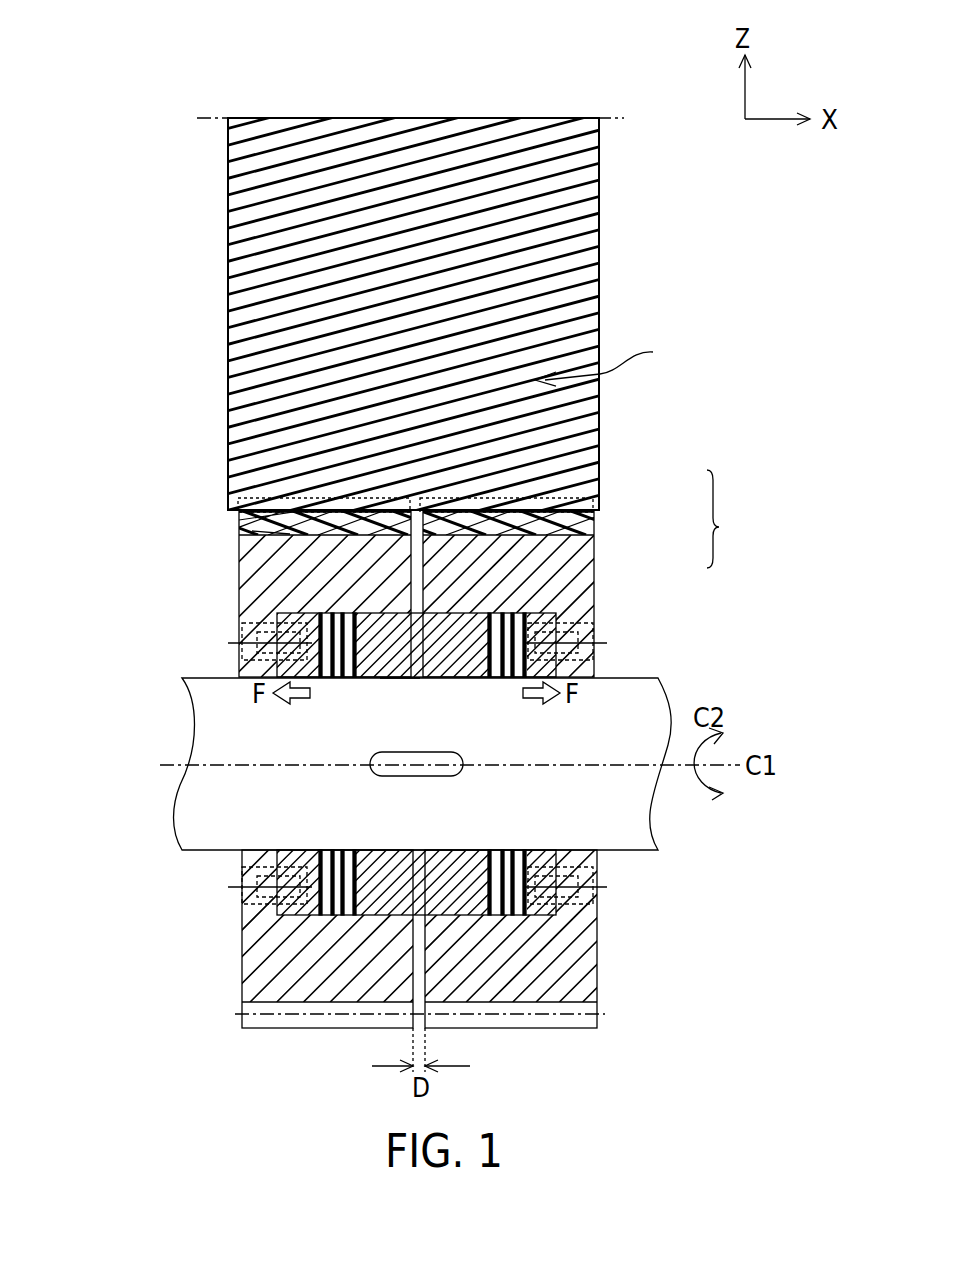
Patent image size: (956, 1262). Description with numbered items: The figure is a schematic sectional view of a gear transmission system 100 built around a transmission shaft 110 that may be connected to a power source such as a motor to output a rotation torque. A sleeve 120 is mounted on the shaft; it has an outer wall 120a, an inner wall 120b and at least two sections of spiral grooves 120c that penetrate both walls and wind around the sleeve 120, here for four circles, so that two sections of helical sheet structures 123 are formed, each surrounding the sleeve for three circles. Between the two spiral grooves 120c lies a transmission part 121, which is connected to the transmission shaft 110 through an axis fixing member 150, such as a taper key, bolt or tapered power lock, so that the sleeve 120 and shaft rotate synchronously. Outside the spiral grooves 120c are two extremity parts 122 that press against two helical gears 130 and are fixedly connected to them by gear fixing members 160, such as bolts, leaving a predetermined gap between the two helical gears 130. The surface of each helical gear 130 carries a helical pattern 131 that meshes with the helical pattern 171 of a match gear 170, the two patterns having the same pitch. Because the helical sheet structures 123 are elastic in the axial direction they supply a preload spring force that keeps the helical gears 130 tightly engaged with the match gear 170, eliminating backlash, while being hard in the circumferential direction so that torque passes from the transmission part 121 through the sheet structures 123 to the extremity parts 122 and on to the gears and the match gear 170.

The gear transmission system 100 is at (82, 41).
The transmission shaft 110 is at (625, 690).
The sleeve 120 is at (737, 519).
The outer wall 120a is at (298, 610).
The inner wall 120b is at (398, 682).
The spiral grooves 120c is at (323, 918).
The transmission part 121 is at (553, 537).
The extremity parts 122 is at (528, 485).
The helical sheet structures 123 is at (350, 915).
The helical gears 130 is at (255, 593).
The helical pattern 131 is at (239, 518).
The axis fixing member 150 is at (417, 776).
The gear fixing members 160 is at (242, 652).
The match gear 170 is at (577, 422).
The helical pattern 171 is at (616, 362).